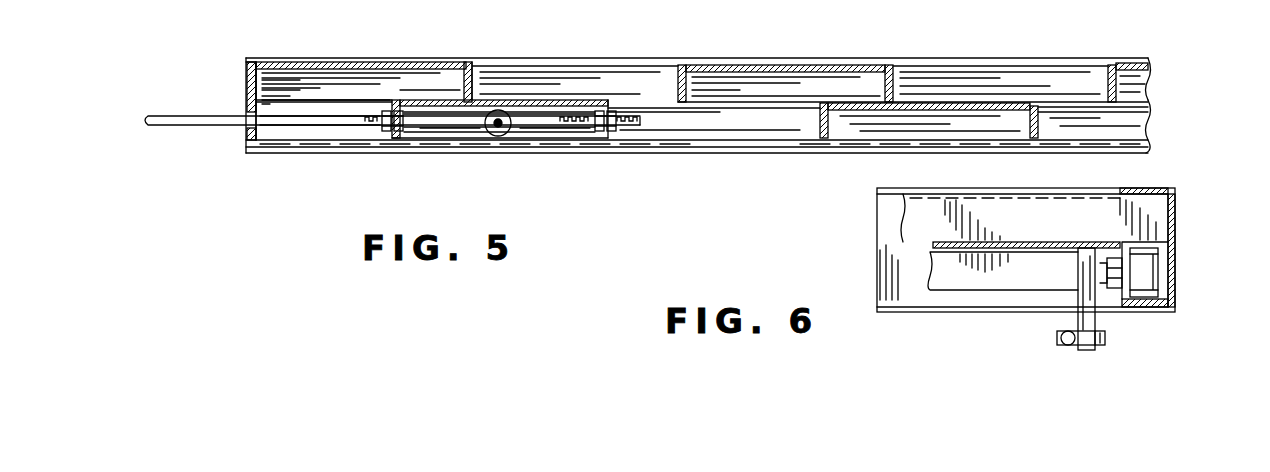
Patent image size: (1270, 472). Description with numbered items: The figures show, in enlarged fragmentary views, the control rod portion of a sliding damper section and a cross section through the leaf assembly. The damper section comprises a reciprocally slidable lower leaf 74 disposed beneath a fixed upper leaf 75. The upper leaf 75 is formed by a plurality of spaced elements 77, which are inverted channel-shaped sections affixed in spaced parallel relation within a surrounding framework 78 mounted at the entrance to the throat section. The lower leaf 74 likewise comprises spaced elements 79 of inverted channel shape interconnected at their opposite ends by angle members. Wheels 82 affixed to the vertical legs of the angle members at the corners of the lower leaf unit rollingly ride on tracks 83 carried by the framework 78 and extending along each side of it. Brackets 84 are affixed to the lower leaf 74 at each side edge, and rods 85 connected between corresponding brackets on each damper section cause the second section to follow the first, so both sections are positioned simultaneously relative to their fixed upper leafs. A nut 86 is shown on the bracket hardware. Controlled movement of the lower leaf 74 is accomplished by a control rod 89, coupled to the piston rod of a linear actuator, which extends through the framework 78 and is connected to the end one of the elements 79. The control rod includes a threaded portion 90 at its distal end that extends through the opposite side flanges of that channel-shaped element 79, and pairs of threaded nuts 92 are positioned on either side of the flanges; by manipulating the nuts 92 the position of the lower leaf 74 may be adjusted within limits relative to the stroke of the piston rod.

In FIG. 5, the lower leaf 74 is at (1160, 118).
In FIG. 6, the lower leaf 74 is at (925, 278).
In FIG. 5, the upper leaf 75 is at (1160, 78).
In FIG. 6, the upper leaf 75 is at (895, 218).
In FIG. 5, the spaced elements 77 is at (470, 72).
In FIG. 6, the spaced elements 77 is at (1160, 232).
In FIG. 5, the framework 78 is at (250, 75).
In FIG. 6, the framework 78 is at (1178, 208).
In FIG. 5, the spaced elements 79 is at (570, 104).
In FIG. 6, the spaced elements 79 is at (1026, 245).
In FIG. 5, the wheels 82 is at (496, 152).
In FIG. 6, the wheels 82 is at (1150, 273).
In FIG. 5, the tracks 83 is at (458, 153).
In FIG. 6, the tracks 83 is at (1140, 308).
In FIG. 6, the brackets 84 is at (1086, 250).
In FIG. 6, the rods 85 is at (1068, 333).
In FIG. 6, the nut 86 is at (1055, 338).
In FIG. 5, the control rod 89 is at (166, 126).
In FIG. 5, the threaded portion 90 is at (562, 152).
In FIG. 5, the threaded nuts 92 is at (399, 152).